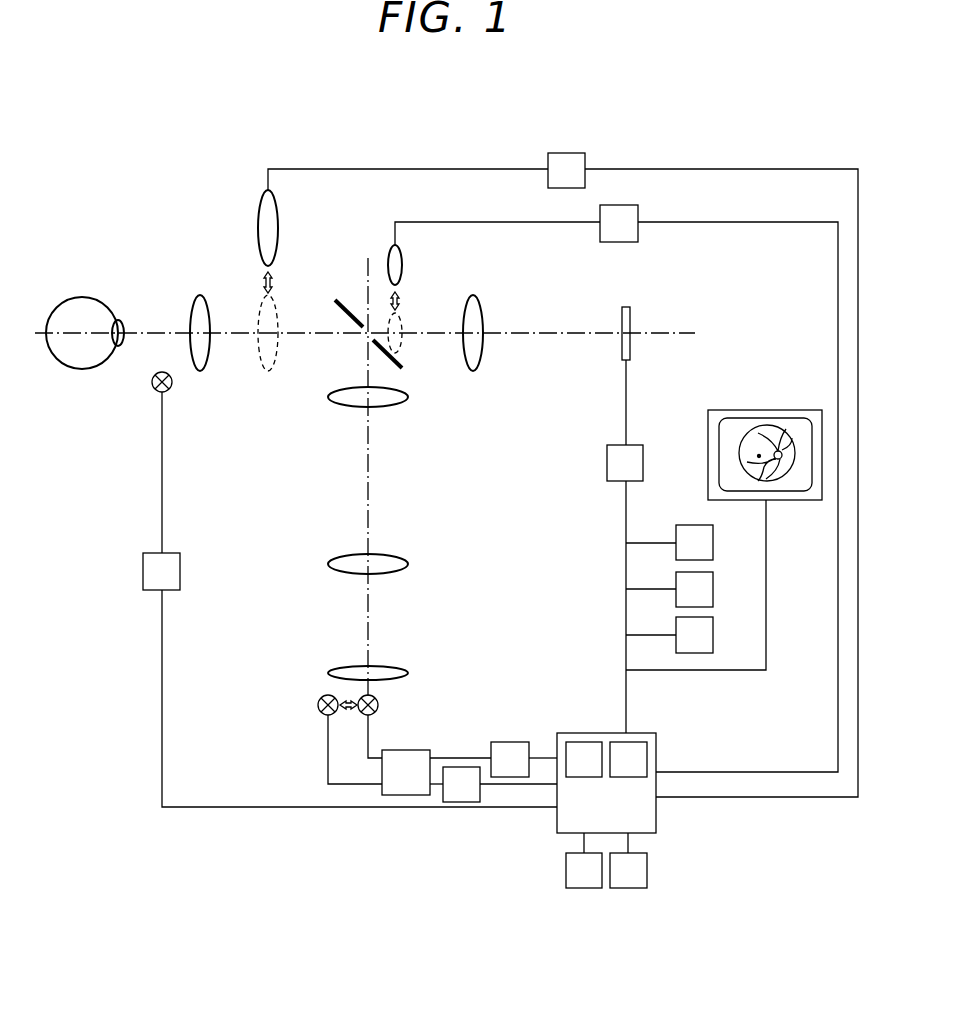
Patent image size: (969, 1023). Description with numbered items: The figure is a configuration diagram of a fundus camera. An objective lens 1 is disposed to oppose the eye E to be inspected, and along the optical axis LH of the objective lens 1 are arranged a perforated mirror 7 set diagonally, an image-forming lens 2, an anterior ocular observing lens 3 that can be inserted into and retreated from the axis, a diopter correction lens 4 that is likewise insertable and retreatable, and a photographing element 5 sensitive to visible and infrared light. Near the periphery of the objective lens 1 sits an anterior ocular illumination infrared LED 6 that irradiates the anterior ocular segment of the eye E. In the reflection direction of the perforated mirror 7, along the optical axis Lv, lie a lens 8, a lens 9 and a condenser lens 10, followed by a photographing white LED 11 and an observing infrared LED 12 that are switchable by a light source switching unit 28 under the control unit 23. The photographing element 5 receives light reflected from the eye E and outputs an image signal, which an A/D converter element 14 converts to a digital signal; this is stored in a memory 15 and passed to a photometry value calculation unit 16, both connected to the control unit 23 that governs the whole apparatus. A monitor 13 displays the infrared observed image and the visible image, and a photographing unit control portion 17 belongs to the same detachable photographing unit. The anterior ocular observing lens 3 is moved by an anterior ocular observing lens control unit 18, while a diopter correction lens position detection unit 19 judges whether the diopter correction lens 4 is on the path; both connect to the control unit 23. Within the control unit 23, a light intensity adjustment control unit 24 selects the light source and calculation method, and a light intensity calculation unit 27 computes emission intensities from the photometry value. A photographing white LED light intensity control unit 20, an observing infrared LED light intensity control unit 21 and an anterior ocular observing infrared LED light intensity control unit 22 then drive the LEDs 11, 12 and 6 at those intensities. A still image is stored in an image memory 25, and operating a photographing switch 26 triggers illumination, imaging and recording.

The eye to be inspected E is at (80, 369).
The objective lens 1 is at (200, 295).
The image-forming lens 2 is at (473, 295).
The anterior ocular observing lens 3 is at (278, 228).
The diopter correction lens 4 is at (402, 262).
The photographing element 5 is at (630, 322).
The anterior ocular illumination infrared LED 6 is at (152, 382).
The perforated mirror 7 is at (338, 307).
The lens 8 is at (343, 389).
The lens 9 is at (345, 556).
The condenser lens 10 is at (345, 666).
The photographing white LED 11 is at (379, 706).
The observing infrared LED 12 is at (318, 705).
The monitor 13 is at (764, 410).
The A/D converter element 14 is at (643, 460).
The memory 15 is at (713, 543).
The photometry value calculation unit 16 is at (713, 589).
The photographing unit control portion 17 is at (713, 635).
The anterior ocular observing lens control unit 18 is at (566, 153).
The diopter correction lens position detection unit 19 is at (632, 215).
The photographing white LED light intensity control unit 20 is at (510, 742).
The observing infrared LED light intensity control unit 21 is at (462, 797).
The anterior ocular observing infrared LED light intensity control unit 22 is at (180, 572).
The control unit 23 is at (656, 821).
The light intensity adjustment control unit 24 is at (585, 742).
The image memory 25 is at (585, 880).
The photographing switch 26 is at (630, 880).
The light intensity calculation unit 27 is at (633, 742).
The light source switching unit 28 is at (420, 758).
The optical axis of the perforated mirror in the reflection direction Lv is at (368, 268).
The optical axis of the objective lens LH is at (682, 333).